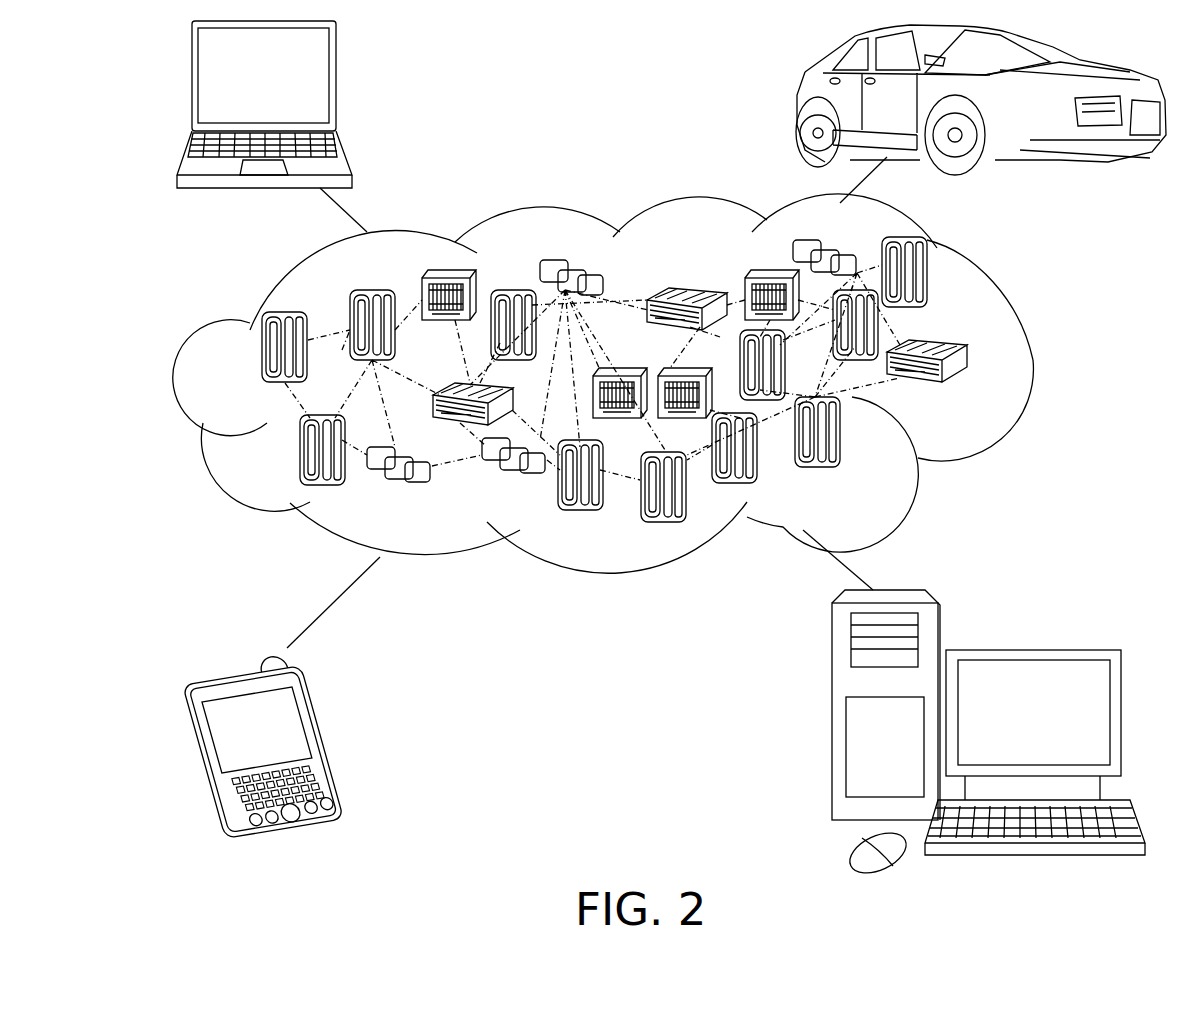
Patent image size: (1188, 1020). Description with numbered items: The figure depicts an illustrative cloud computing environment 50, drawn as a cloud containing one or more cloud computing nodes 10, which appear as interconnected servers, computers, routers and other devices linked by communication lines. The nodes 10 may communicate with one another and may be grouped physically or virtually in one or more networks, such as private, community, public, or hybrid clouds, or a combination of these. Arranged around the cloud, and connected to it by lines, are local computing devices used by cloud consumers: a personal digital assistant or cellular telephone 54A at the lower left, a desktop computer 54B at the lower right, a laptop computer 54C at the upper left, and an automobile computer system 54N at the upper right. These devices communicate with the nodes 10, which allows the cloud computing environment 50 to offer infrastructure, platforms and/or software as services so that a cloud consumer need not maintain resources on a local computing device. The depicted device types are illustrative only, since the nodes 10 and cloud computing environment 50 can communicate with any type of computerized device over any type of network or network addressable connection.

The laptop computer 54C is at (338, 82).
The automobile computer system 54N is at (800, 102).
The cloud computing environment 50 is at (1030, 364).
The cloud computing nodes 10 is at (975, 389).
The personal digital assistant (PDA) or cellular telephone 54A is at (330, 741).
The desktop computer 54B is at (1030, 648).